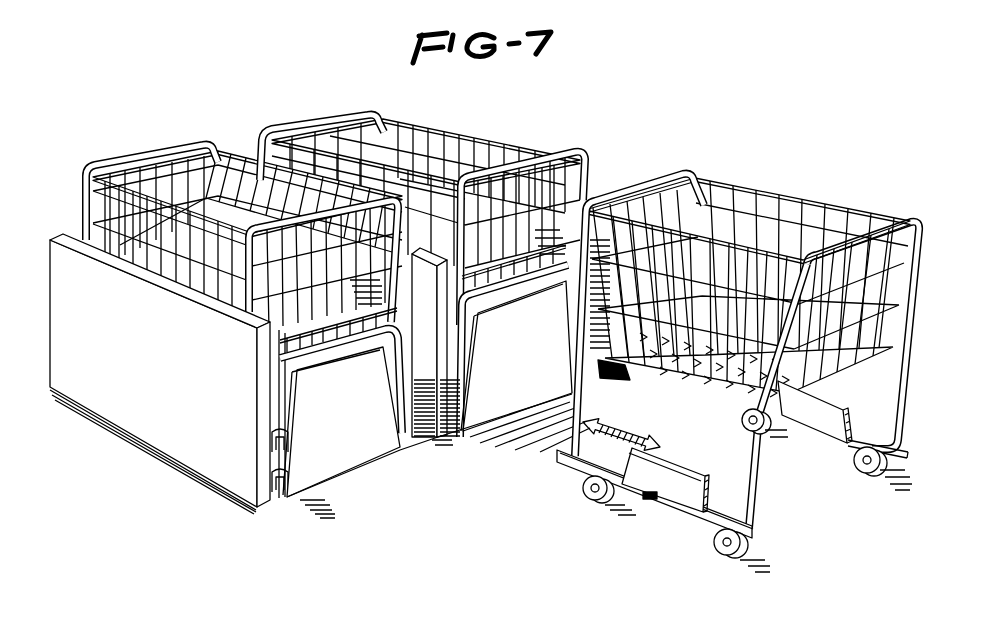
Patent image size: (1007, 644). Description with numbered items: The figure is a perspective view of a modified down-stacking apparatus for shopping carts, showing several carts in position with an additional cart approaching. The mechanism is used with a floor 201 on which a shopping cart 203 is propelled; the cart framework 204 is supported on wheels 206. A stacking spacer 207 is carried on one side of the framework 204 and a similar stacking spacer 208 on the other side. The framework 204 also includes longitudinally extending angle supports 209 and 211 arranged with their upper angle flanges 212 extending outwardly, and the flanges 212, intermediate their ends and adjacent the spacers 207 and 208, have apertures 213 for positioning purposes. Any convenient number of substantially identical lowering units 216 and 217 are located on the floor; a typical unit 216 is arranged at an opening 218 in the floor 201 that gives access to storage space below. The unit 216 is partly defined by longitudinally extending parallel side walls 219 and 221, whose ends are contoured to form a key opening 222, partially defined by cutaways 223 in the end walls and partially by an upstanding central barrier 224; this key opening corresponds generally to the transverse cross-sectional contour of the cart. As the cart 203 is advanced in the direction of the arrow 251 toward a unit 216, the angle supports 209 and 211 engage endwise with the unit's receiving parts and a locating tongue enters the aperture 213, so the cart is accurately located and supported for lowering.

The floor 201 is at (429, 472).
The shopping cart 203 is at (529, 270).
The cart framework 204 is at (779, 396).
The wheels 206 is at (732, 490).
The stacking spacer 207 is at (670, 479).
The stacking spacer 208 is at (825, 411).
The angle support 209 is at (646, 494).
The angle support 211 is at (898, 439).
The upper angle flanges 212 is at (834, 520).
The apertures 213 is at (637, 524).
The lowering unit 216 is at (153, 460).
The lowering unit 217 is at (525, 381).
The opening 218 is at (273, 531).
The side wall 219 is at (160, 370).
The side wall 221 is at (341, 381).
The key opening 222 is at (250, 414).
The cutaways 223 is at (432, 373).
The upstanding central barrier 224 is at (341, 422).
The arrow 251 is at (626, 425).